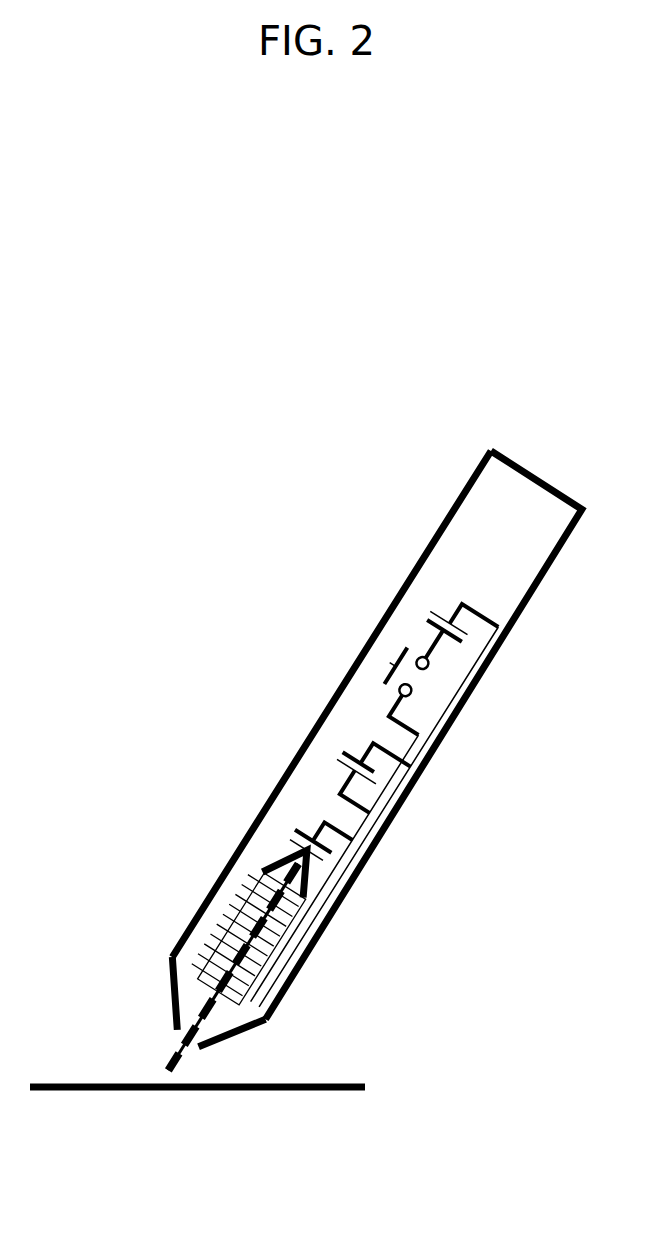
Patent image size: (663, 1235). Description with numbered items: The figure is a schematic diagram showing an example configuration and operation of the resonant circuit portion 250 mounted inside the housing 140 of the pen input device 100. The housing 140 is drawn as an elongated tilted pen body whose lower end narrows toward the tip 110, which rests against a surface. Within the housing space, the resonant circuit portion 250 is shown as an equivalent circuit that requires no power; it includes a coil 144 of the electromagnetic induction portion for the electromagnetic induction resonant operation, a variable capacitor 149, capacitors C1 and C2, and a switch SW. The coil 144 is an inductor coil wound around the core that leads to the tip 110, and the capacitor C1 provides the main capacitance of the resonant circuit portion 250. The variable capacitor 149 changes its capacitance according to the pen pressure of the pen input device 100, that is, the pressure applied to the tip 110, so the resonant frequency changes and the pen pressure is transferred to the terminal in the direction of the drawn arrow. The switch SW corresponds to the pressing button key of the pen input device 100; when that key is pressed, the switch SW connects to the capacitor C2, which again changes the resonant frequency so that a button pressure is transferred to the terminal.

The pen input device 100 is at (312, 567).
The tip 110 is at (168, 1058).
The housing 140 is at (456, 503).
The coil 144 is at (236, 917).
The variable capacitor 149 is at (323, 860).
The resonant circuit portion 250 is at (311, 784).
The capacitor C1 is at (376, 784).
The capacitor C2 is at (462, 642).
The switch SW is at (382, 661).